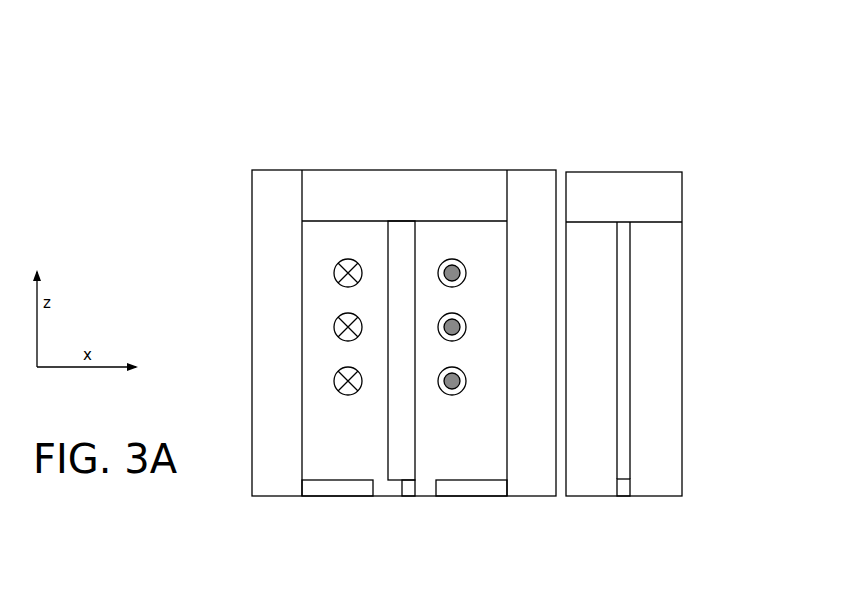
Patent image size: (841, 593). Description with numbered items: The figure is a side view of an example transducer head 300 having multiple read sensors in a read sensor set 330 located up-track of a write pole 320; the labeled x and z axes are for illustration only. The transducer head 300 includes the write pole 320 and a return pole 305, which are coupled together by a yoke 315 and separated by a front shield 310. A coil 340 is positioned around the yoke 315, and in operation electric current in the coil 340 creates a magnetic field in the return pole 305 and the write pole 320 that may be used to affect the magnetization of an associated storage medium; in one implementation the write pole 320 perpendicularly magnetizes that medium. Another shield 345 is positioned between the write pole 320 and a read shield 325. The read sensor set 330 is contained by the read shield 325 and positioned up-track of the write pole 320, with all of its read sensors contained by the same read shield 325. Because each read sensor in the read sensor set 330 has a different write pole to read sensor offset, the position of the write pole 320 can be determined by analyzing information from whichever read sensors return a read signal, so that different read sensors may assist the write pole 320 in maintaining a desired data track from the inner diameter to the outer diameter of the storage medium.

The transducer head 300 is at (690, 72).
The return pole 305 is at (215, 557).
The front shield 310 is at (280, 592).
The yoke 315 is at (347, 592).
The write pole 320 is at (410, 497).
The read shield 325 is at (740, 592).
The read sensor set 330 is at (623, 497).
The coil 340 is at (442, 250).
The shield 345 is at (477, 497).